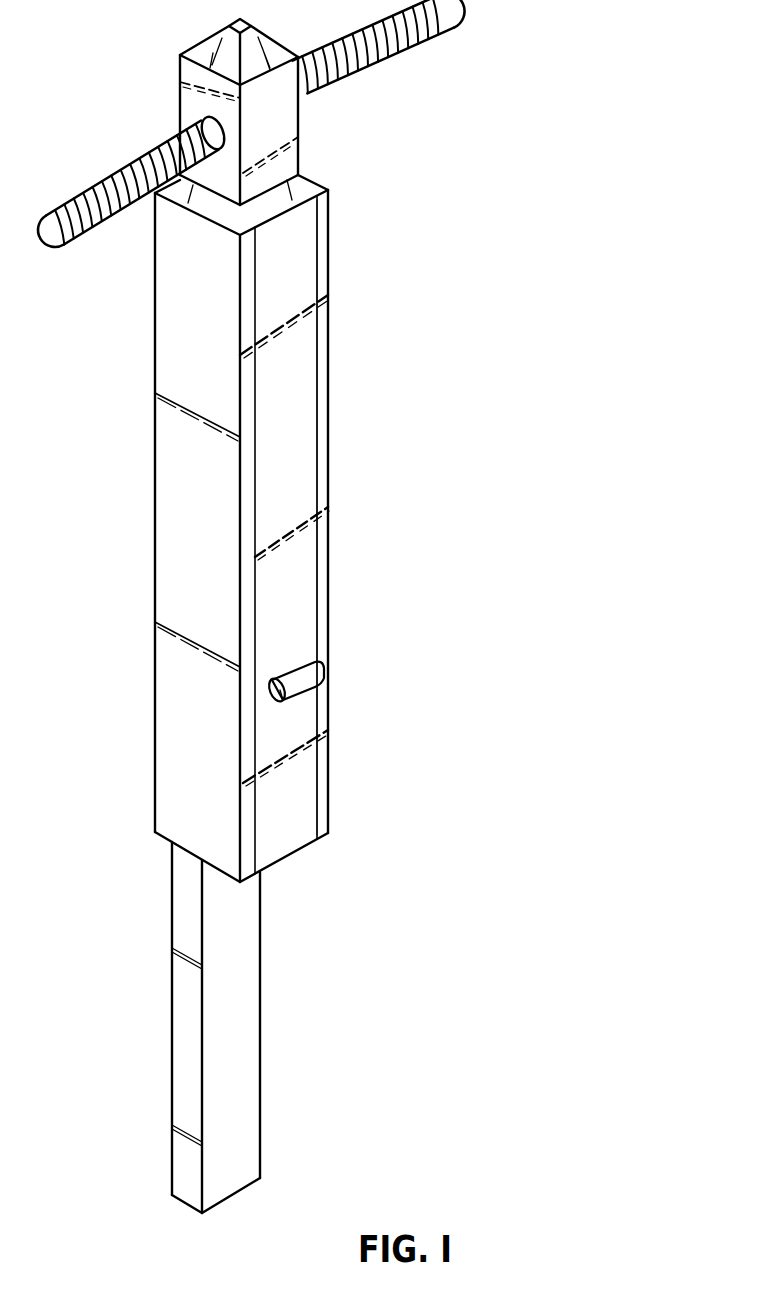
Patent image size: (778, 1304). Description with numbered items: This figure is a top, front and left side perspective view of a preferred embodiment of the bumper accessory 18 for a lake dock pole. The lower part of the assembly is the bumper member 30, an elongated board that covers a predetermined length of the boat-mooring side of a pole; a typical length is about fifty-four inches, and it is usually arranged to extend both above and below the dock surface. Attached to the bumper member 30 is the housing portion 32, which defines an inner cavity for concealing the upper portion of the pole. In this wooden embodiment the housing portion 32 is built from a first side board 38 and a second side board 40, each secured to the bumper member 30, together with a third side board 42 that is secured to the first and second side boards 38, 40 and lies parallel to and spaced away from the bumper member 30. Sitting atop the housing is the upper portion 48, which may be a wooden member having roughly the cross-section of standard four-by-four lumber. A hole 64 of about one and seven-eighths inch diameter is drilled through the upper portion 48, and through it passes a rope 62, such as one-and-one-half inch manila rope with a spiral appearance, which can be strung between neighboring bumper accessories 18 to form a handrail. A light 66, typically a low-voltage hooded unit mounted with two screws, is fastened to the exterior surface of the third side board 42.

The bumper accessory 18 is at (68, 495).
The bumper member 30 is at (238, 1045).
The housing portion 32 is at (365, 417).
The first side board 38 is at (177, 752).
The second side board 40 is at (325, 763).
The third side board 42 is at (292, 365).
The upper portion 48 is at (285, 113).
The rope 62 is at (390, 57).
The hole 64 is at (205, 118).
The light 66 is at (310, 660).